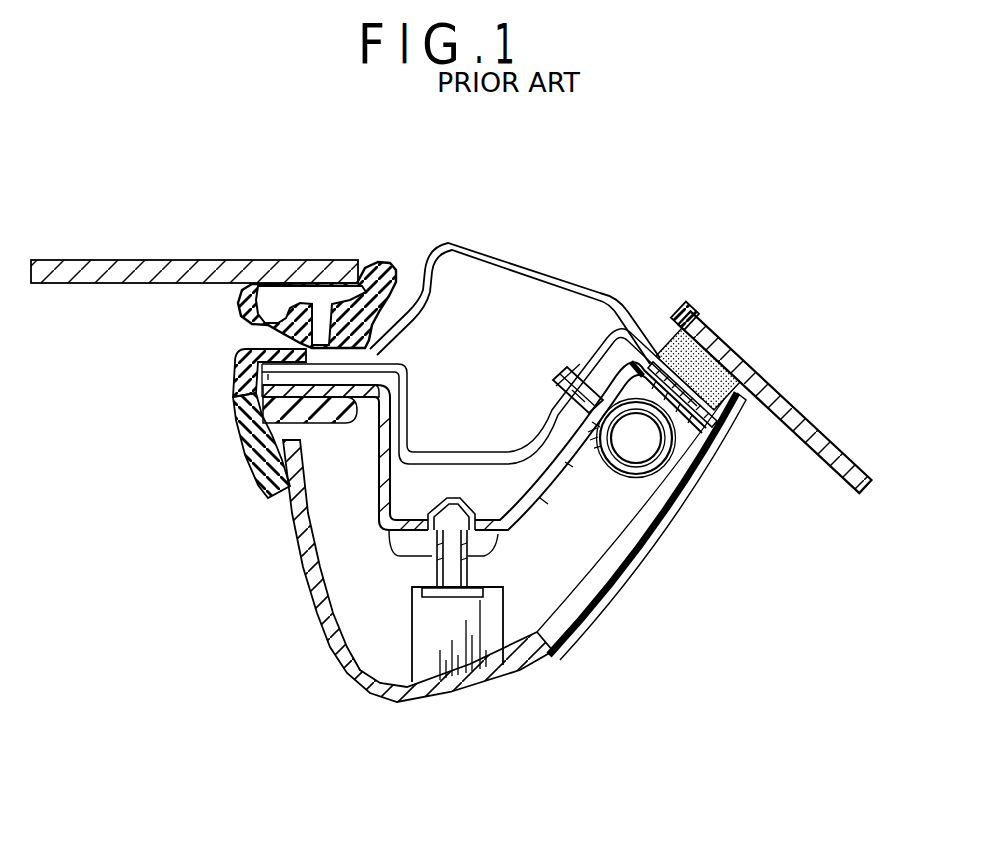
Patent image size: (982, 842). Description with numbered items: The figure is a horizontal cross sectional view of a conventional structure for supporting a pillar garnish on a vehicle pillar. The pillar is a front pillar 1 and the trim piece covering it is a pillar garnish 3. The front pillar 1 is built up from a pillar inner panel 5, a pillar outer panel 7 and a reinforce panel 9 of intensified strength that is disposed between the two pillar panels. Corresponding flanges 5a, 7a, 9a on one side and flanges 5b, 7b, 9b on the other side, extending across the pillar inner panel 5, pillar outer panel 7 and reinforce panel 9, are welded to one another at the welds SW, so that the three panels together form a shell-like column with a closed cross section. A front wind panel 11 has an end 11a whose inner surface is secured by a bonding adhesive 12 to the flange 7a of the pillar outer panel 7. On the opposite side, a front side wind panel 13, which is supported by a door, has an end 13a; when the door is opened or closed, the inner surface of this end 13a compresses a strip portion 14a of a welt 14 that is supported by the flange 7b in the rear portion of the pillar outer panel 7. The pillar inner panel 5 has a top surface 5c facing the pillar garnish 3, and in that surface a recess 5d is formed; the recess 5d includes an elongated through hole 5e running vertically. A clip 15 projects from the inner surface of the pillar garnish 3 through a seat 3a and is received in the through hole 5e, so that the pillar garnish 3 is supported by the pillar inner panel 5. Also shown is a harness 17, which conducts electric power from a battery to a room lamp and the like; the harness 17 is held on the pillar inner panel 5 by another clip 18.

The front pillar 1 is at (616, 304).
The pillar garnish 3 is at (590, 627).
The seat 3a is at (508, 648).
The pillar inner panel 5 is at (545, 497).
The flange 5a is at (694, 434).
The flange 5b is at (266, 391).
The top surface 5c is at (485, 554).
The recess 5d is at (498, 536).
The through hole 5e is at (462, 503).
The pillar outer panel 7 is at (537, 264).
The flange 7a is at (736, 412).
The flange 7b is at (258, 345).
The reinforce panel 9 is at (413, 380).
The flange 9a is at (708, 424).
The flange 9b is at (266, 380).
The front wind panel 11 is at (827, 436).
The end 11a is at (690, 316).
The bonding adhesive 12 is at (706, 350).
The front side wind panel 13 is at (76, 262).
The end 13a is at (343, 276).
The welt 14 is at (400, 264).
The strip portion 14a is at (298, 286).
The clip 15 is at (433, 566).
The harness 17 is at (636, 463).
The clip 18 is at (566, 376).
The weld SW is at (320, 340).